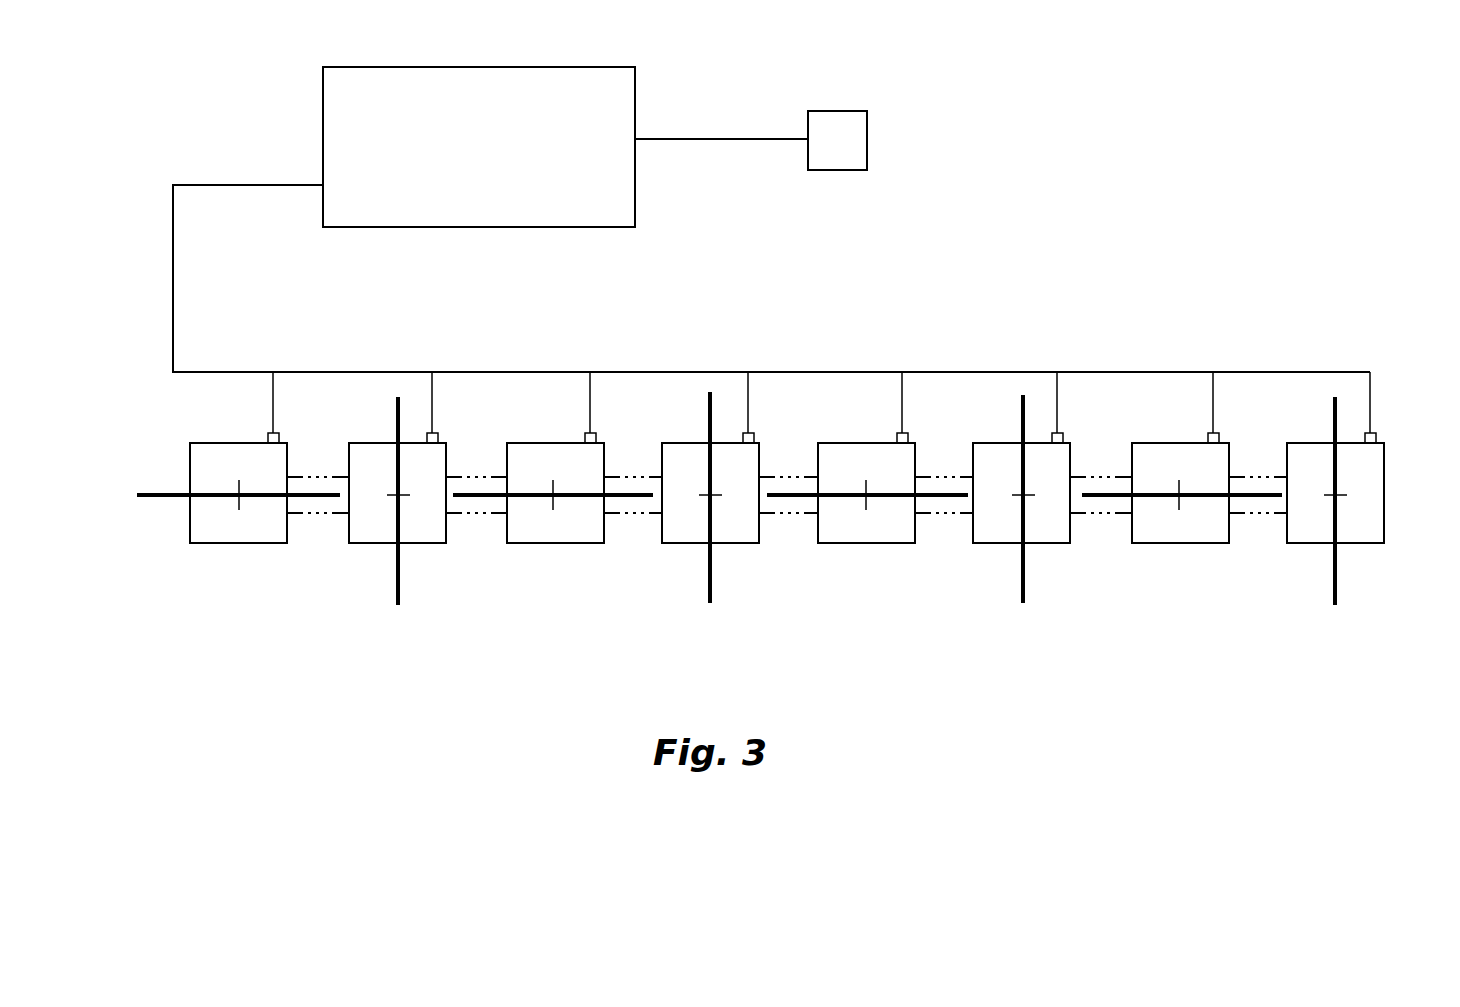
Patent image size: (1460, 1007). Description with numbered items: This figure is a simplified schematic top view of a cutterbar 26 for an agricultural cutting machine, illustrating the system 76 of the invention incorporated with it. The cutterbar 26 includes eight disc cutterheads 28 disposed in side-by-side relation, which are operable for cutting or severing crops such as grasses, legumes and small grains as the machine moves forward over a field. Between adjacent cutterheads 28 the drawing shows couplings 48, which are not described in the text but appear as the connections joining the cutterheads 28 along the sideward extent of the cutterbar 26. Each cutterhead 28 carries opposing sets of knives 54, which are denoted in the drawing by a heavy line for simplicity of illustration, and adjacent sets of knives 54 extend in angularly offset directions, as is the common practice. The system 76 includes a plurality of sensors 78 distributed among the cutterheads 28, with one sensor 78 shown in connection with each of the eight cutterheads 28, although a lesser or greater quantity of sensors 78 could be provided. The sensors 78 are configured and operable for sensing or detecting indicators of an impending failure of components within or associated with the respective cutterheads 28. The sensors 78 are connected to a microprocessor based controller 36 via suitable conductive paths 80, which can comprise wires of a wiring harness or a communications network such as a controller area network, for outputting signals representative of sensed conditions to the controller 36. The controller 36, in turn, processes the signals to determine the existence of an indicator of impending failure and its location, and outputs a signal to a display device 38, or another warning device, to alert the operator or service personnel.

The cutterbar 26 is at (1438, 416).
The disc cutterhead 28 is at (188, 527).
The controller 36 is at (635, 97).
The display device 38 is at (867, 160).
The clutch 48 is at (330, 513).
The knives 54 is at (160, 492).
The system 76 is at (1037, 173).
The sensor 78 is at (280, 437).
The conductive path 80 is at (173, 300).